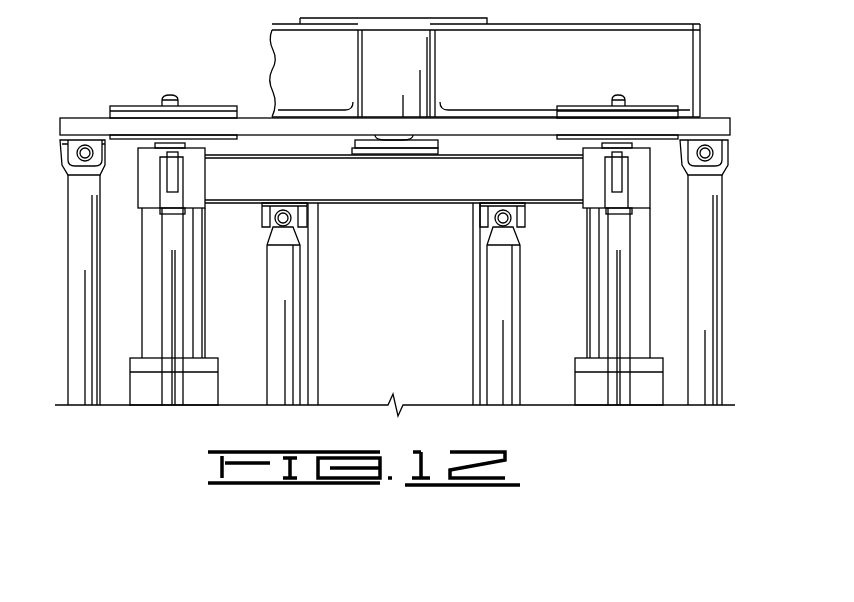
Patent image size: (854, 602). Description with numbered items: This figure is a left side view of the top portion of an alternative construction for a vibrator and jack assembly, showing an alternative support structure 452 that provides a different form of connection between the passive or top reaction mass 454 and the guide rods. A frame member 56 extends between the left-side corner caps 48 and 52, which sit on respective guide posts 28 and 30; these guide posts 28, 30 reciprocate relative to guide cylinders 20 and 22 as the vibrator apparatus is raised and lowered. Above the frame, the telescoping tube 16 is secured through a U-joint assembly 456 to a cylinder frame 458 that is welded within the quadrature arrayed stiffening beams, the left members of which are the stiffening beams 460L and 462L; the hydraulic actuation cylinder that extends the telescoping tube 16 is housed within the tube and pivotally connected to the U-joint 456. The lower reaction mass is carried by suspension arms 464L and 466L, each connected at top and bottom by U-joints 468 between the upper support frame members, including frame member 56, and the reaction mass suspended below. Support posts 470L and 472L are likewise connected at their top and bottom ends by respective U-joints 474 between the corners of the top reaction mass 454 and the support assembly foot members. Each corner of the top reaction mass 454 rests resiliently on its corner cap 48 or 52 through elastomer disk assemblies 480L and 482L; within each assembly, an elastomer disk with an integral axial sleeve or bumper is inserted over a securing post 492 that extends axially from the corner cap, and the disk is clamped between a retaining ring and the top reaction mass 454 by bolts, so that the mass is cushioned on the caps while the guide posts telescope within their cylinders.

The telescoping tube 16 is at (400, 324).
The guide cylinder 20 is at (205, 388).
The guide cylinder 22 is at (580, 380).
The guide post 28 is at (192, 268).
The guide post 30 is at (635, 282).
The corner cap 48 is at (145, 195).
The corner cap 52 is at (648, 195).
The frame member 56 is at (402, 188).
The support structure 452 is at (116, 72).
The top reaction mass 454 is at (248, 128).
The U-joint assembly 456 is at (422, 138).
The cylinder frame 458 is at (410, 82).
The stiffening beam 460L is at (340, 82).
The stiffening beam 462L is at (565, 82).
The suspension arm 464L is at (280, 273).
The suspension arm 466L is at (512, 270).
The U-joint 468 is at (292, 226).
The support post 470L is at (83, 254).
The support post 472L is at (706, 280).
The U-joint 474 is at (62, 165).
The elastomer disk assembly 480L is at (153, 106).
The elastomer disk assembly 482L is at (595, 106).
The securing post 492 is at (170, 95).